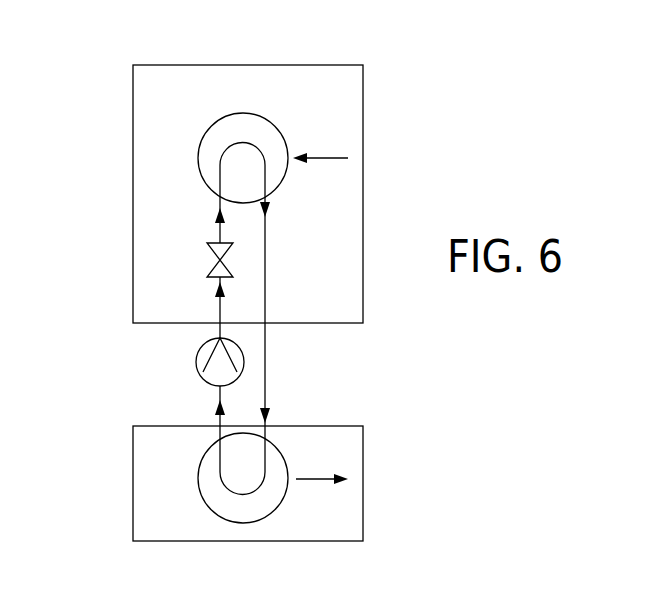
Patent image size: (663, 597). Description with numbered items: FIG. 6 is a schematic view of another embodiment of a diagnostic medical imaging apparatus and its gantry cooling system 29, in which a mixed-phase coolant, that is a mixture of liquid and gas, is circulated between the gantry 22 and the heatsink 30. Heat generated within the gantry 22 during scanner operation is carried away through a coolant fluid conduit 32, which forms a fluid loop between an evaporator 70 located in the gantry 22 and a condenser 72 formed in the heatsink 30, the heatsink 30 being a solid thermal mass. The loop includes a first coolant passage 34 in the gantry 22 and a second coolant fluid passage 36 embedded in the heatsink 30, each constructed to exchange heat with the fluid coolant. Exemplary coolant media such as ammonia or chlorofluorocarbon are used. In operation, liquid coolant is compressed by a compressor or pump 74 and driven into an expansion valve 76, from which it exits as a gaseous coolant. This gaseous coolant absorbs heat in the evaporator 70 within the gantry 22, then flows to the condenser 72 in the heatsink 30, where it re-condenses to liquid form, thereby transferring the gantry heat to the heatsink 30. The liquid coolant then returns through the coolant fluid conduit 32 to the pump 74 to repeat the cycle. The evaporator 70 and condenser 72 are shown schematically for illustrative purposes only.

The gantry 22 is at (372, 123).
The gantry cooling system 29 is at (352, 355).
The heatsink 30 is at (372, 467).
The coolant fluid conduit 32 is at (200, 312).
The first coolant passage 34 is at (272, 104).
The second coolant fluid passage 36 is at (281, 519).
The evaporator 70 is at (244, 114).
The condenser 72 is at (285, 494).
The compressor or pump 74 is at (197, 362).
The expansion valve 76 is at (207, 259).